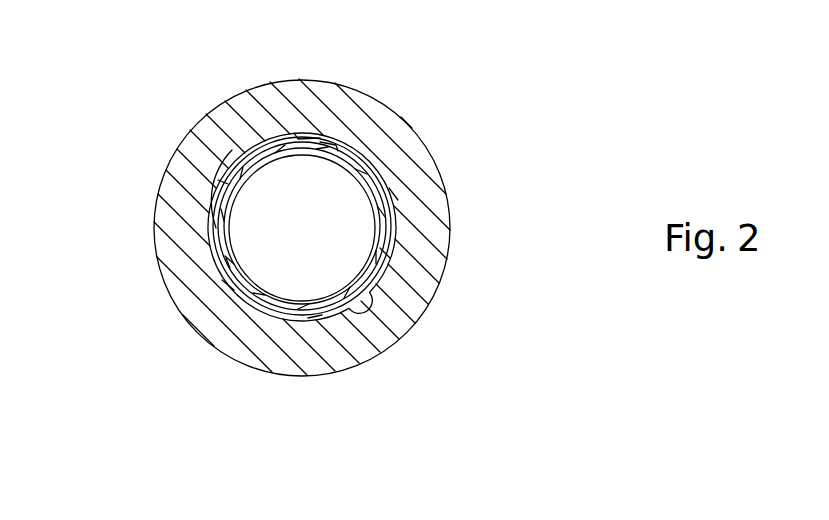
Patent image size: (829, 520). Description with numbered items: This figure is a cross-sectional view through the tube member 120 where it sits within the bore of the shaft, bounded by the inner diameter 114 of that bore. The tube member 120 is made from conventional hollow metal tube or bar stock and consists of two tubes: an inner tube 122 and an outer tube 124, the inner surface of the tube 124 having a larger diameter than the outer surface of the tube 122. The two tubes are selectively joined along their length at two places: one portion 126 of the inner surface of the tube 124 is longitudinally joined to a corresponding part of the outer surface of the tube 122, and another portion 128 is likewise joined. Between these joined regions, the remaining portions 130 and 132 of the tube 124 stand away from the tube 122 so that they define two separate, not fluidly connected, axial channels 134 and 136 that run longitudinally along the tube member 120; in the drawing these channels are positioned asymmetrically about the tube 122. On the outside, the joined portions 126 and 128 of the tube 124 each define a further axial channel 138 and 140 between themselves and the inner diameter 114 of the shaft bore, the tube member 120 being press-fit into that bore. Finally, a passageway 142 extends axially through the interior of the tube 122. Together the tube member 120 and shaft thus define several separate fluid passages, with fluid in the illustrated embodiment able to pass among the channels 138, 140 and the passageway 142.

The inner diameter 114 is at (406, 323).
The tube member 120 is at (386, 181).
The tube 122 is at (382, 221).
The tube 124 is at (401, 192).
The portion 126 is at (222, 183).
The portion 128 is at (385, 253).
The portion 130 is at (307, 130).
The portion 132 is at (228, 285).
The channel 134 is at (331, 146).
The channel 136 is at (231, 268).
The channel 138 is at (224, 191).
The channel 140 is at (315, 318).
The passageway 142 is at (332, 254).